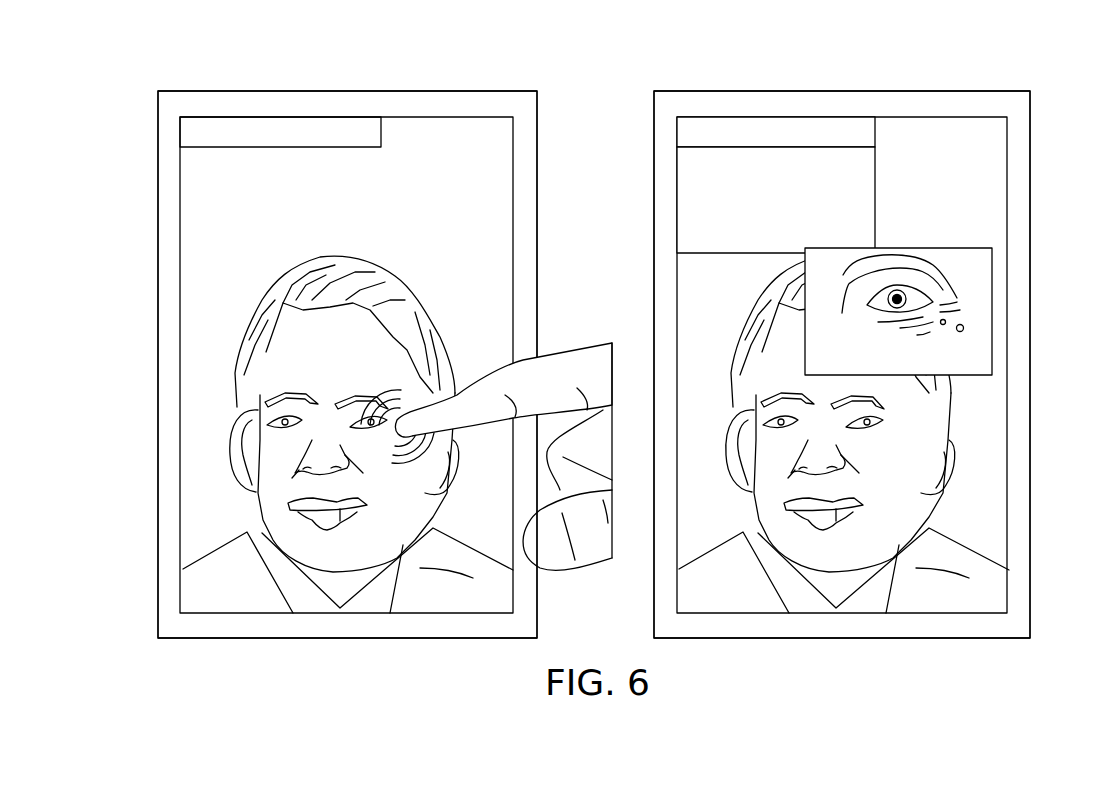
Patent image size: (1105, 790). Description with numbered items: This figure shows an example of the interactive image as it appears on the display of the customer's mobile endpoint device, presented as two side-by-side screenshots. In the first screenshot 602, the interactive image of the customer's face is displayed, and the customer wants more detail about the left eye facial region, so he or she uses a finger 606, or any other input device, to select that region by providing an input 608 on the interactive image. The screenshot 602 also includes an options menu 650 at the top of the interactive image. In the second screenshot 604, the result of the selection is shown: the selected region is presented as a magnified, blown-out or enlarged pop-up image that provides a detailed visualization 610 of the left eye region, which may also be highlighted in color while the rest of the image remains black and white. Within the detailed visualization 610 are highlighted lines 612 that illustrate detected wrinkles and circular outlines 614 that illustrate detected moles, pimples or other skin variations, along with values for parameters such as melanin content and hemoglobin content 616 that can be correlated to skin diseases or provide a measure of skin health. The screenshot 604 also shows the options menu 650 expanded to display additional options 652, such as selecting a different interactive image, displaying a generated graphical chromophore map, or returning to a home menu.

The screenshot 602 is at (347, 379).
The screenshot 604 is at (842, 379).
The finger 606 is at (483, 380).
The input 608 is at (386, 395).
The detailed visualization 610 is at (943, 290).
The highlighted lines 612 is at (960, 303).
The circular outlines 614 is at (965, 327).
The chromophore values text 616 is at (930, 362).
The options menu 650 is at (180, 140).
The additional options 652 is at (866, 184).